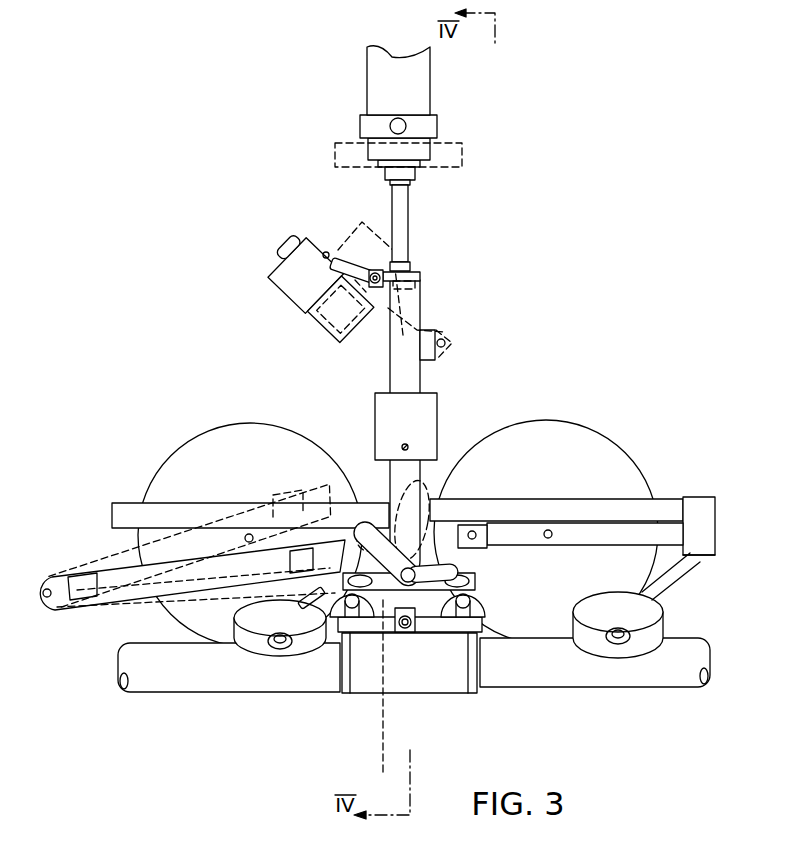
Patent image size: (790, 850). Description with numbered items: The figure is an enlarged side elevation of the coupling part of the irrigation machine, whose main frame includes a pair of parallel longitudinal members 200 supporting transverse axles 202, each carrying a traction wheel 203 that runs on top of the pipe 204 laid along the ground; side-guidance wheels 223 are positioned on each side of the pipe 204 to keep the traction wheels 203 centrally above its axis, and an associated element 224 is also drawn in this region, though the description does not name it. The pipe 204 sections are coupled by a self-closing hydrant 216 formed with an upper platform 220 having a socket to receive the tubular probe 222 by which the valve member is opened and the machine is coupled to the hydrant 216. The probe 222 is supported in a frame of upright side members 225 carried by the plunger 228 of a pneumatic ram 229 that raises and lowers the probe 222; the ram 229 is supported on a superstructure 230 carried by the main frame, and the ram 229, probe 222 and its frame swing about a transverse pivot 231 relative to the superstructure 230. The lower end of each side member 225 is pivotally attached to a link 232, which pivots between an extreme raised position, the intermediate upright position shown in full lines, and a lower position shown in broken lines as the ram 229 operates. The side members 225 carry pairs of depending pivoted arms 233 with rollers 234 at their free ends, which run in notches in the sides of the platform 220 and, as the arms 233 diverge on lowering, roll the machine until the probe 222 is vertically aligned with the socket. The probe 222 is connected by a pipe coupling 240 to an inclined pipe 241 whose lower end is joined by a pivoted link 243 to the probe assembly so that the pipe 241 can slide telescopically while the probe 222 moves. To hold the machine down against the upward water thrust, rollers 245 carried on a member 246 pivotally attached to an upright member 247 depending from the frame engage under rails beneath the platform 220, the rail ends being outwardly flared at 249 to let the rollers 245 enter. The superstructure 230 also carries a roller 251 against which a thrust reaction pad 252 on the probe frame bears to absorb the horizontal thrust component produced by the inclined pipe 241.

The longitudinal members 200 is at (178, 513).
The transverse axles 202 is at (248, 534).
The wheel 203 is at (210, 450).
The pipe 204 is at (190, 680).
The hydrant 216 is at (476, 703).
The upper platform 220 is at (478, 690).
The probe 222 is at (430, 428).
The side-guidance wheels 223 is at (270, 656).
The pin / strut 224 is at (318, 606).
The side members 225 is at (410, 302).
The plunger 228 is at (405, 222).
The pneumatic ram 229 is at (415, 70).
The superstructure 230 is at (465, 153).
The transverse pivot 231 is at (405, 118).
The link 232 is at (113, 550).
The pivoted arms 233 is at (375, 530).
The rollers 234 is at (350, 565).
The pipe coupling 240 is at (375, 360).
The inclined pipe 241 is at (305, 243).
The pivoted link 243 is at (360, 268).
The rollers 245 is at (355, 633).
The member 246 is at (448, 640).
The upright member 247 is at (410, 640).
The outwardly flared ends 249 is at (337, 612).
The roller 251 is at (446, 343).
The thrust reaction pad 252 is at (433, 336).